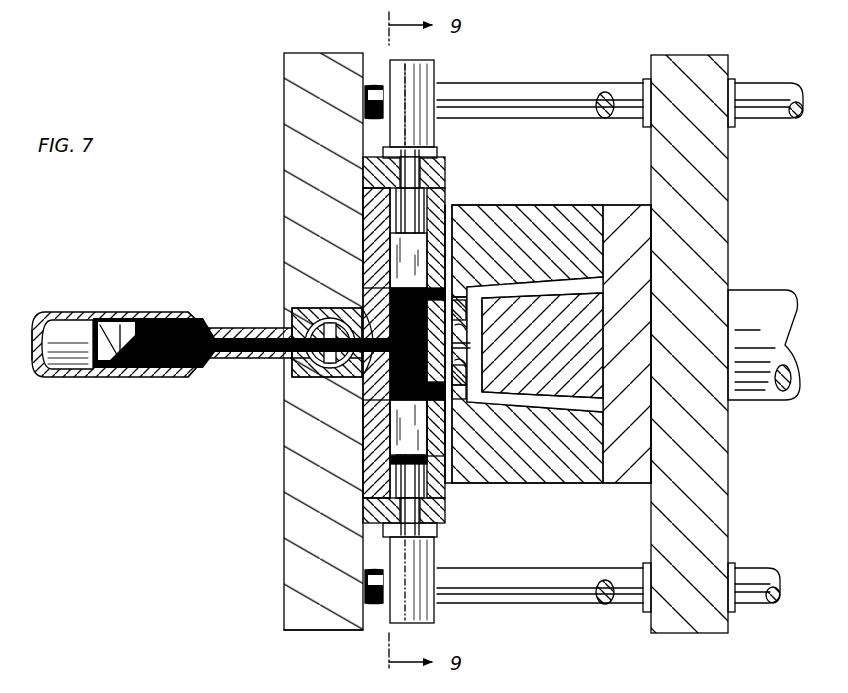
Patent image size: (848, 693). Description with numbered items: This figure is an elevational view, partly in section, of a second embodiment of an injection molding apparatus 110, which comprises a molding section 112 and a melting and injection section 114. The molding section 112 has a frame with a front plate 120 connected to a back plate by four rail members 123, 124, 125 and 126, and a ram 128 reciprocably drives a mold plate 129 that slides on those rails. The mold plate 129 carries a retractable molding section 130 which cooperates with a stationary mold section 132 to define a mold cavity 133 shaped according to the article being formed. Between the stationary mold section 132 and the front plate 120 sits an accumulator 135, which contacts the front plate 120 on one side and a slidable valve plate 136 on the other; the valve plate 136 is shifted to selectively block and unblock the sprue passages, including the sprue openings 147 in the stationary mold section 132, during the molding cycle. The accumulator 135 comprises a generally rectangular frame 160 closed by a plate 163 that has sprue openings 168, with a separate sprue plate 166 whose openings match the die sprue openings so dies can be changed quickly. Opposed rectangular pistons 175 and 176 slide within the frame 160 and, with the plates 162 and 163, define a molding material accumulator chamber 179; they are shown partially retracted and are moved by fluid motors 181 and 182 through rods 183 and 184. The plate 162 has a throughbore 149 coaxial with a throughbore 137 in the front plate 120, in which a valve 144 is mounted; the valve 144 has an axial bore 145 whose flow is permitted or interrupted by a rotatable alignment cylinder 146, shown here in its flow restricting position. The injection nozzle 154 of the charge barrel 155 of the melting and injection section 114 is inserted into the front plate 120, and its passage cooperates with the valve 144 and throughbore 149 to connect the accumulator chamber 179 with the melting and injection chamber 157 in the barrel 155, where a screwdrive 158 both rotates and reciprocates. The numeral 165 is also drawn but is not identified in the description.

The injection molding apparatus 110 is at (162, 524).
The molding section 112 is at (607, 58).
The melting and injection section 114 is at (114, 449).
The front plate 120 is at (284, 590).
The rail member 123 is at (762, 88).
The rail member 124 is at (757, 572).
The rail member 125 is at (508, 84).
The rail member 126 is at (550, 605).
The ram 128 is at (762, 300).
The mold plate 129 is at (728, 200).
The retractable molding section 130 is at (633, 205).
The stationary mold section 132 is at (573, 484).
The mold cavity 133 is at (562, 288).
The accumulator 135 is at (455, 158).
The valve plate 136 is at (445, 205).
The throughbore 137 is at (291, 311).
The valve 144 is at (290, 322).
The bore 145 is at (291, 355).
The alignment cylinder 146 is at (310, 382).
The sprue openings 147 is at (476, 303).
The throughbore 149 is at (360, 303).
The injection nozzle 154 is at (215, 362).
The charge barrel 155 is at (72, 313).
The melting and injection chamber 157 is at (150, 320).
The screwdrive 158 is at (118, 372).
The frame 160 is at (378, 512).
The plate 162 is at (380, 210).
The plate 163 is at (438, 497).
The lower bore wall 165 is at (425, 428).
The sprue plate 166 is at (466, 422).
The sprue openings 168 is at (462, 364).
The piston 175 is at (450, 478).
The piston 176 is at (405, 243).
The accumulator chamber 179 is at (388, 402).
The fluid motor 181 is at (435, 620).
The fluid motor 182 is at (396, 72).
The rod 183 is at (440, 512).
The rod 184 is at (410, 185).